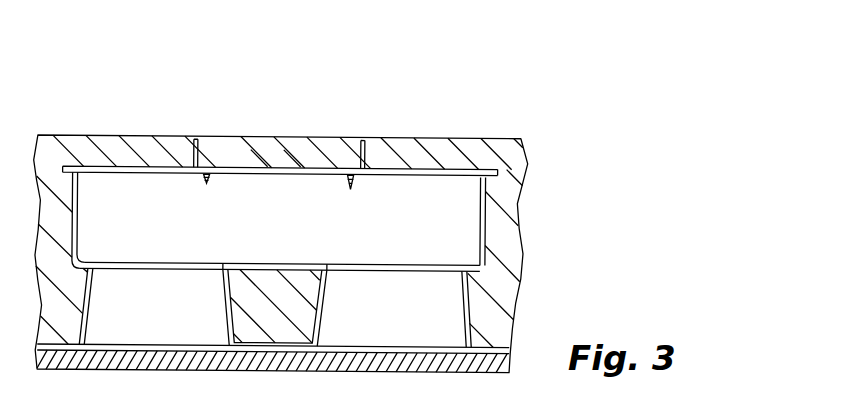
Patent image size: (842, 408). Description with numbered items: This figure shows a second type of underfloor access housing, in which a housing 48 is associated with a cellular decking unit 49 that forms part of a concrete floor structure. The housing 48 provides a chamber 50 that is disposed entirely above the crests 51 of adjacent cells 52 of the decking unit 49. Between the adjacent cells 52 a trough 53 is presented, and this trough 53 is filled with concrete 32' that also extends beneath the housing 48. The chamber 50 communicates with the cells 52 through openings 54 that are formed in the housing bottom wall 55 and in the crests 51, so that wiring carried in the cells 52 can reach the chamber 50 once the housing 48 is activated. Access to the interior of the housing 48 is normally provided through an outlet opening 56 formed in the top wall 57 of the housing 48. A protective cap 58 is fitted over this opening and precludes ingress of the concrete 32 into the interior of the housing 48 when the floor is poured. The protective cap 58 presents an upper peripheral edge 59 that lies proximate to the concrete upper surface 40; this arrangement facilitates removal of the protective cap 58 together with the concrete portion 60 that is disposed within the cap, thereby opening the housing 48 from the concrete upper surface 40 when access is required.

The concrete 32 is at (522, 255).
The concrete 32' is at (247, 307).
The concrete upper surface 40 is at (454, 142).
The housing 48 is at (164, 162).
The cellular decking unit 49 is at (470, 296).
The chamber 50 is at (462, 226).
The crests 51 is at (226, 262).
The cells 52 is at (137, 320).
The trough 53 is at (289, 345).
The openings 54 is at (148, 262).
The housing bottom wall 55 is at (81, 262).
The outlet opening 56 is at (254, 174).
The top wall 57 is at (402, 176).
The protective cap 58 is at (366, 158).
The upper peripheral edge 59 is at (291, 147).
The concrete portion 60 is at (268, 150).